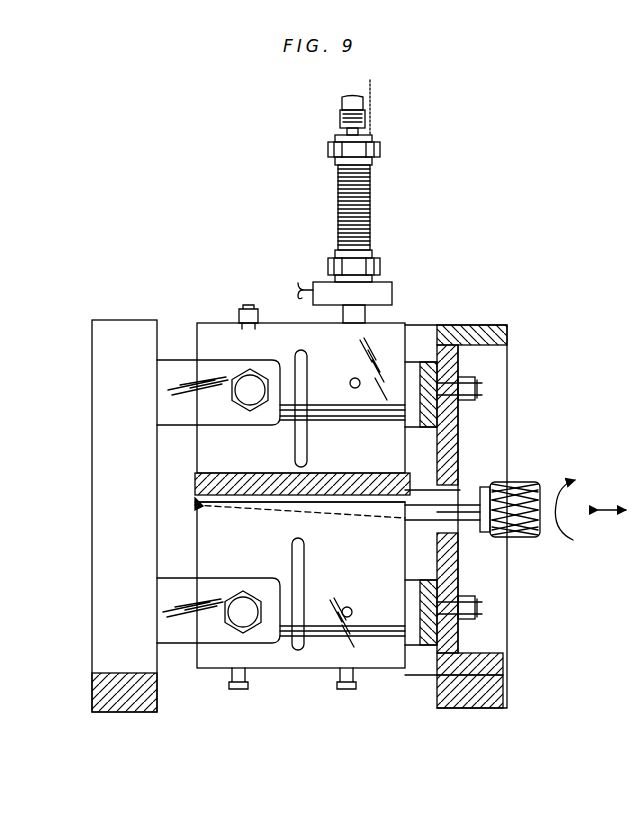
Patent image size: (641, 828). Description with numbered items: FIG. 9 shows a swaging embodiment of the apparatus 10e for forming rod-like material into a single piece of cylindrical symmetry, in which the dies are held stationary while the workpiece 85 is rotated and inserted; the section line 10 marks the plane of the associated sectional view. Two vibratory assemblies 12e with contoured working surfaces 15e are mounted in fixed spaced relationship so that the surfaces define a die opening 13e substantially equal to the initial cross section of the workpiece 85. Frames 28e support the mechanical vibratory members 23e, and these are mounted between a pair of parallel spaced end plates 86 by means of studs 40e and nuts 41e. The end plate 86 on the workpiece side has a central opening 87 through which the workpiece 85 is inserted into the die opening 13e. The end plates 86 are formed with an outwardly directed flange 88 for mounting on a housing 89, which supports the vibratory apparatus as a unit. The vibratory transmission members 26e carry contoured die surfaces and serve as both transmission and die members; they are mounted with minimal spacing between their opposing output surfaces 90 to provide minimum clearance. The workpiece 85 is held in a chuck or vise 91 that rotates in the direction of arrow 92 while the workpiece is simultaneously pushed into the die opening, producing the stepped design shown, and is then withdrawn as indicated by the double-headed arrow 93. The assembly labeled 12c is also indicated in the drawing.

The section line 10 is at (180, 105).
The apparatus 10e is at (318, 245).
The vibratory assembly 12e is at (368, 212).
The clamp assembly 12c is at (374, 670).
The die opening 13e is at (366, 505).
The contoured working surface 15e is at (386, 490).
The mechanical vibratory member 23e is at (395, 323).
The vibratory transmission member 26e is at (226, 328).
The frame 28e is at (176, 370).
The stud 40e is at (478, 393).
The nut 41e is at (466, 377).
The workpiece 85 is at (490, 484).
The end plate 86 is at (100, 460).
The central opening 87 is at (447, 540).
The flange 88 is at (505, 660).
The housing 89 is at (503, 700).
The output surface 90 is at (200, 500).
The chuck or vise 91 is at (530, 538).
The arrow 92 is at (578, 475).
The double-headed arrow 93 is at (608, 511).